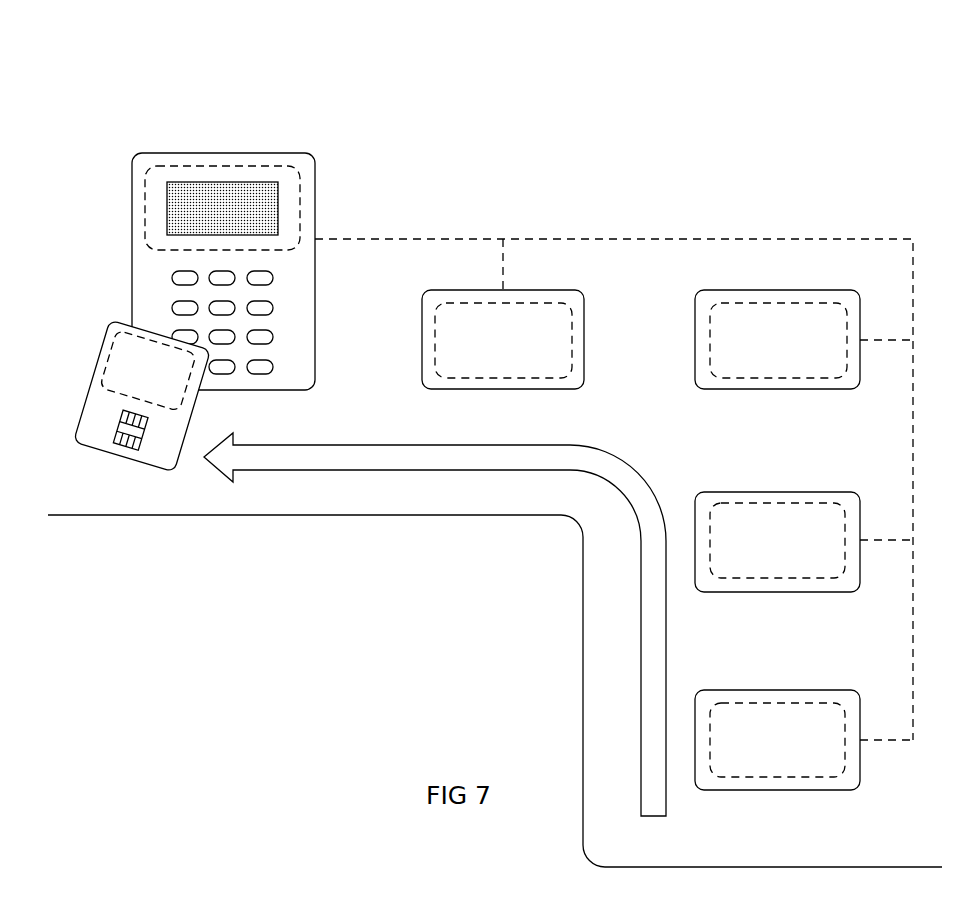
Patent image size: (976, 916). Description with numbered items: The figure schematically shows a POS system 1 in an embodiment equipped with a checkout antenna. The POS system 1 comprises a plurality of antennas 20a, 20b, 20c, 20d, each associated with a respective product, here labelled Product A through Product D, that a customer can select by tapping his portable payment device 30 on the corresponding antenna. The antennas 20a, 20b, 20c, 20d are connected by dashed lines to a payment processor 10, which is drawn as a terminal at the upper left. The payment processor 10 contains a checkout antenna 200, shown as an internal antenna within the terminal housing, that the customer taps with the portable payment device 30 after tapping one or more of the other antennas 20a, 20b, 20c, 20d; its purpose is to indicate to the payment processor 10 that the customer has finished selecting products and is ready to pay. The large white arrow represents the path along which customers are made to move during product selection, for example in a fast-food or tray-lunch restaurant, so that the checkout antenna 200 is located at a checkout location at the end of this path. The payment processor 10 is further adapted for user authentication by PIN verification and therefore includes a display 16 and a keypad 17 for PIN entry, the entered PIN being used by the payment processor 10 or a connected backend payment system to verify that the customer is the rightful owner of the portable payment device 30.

The POS system 1 is at (782, 103).
The payment processor 10 is at (325, 203).
The display 16 is at (188, 197).
The keypad 17 is at (260, 307).
The checkout antenna 200 is at (245, 166).
The portable payment device 30 is at (70, 412).
The antenna 20a is at (783, 685).
The antenna 20b is at (780, 487).
The antenna 20c is at (783, 287).
The antenna 20d is at (465, 287).